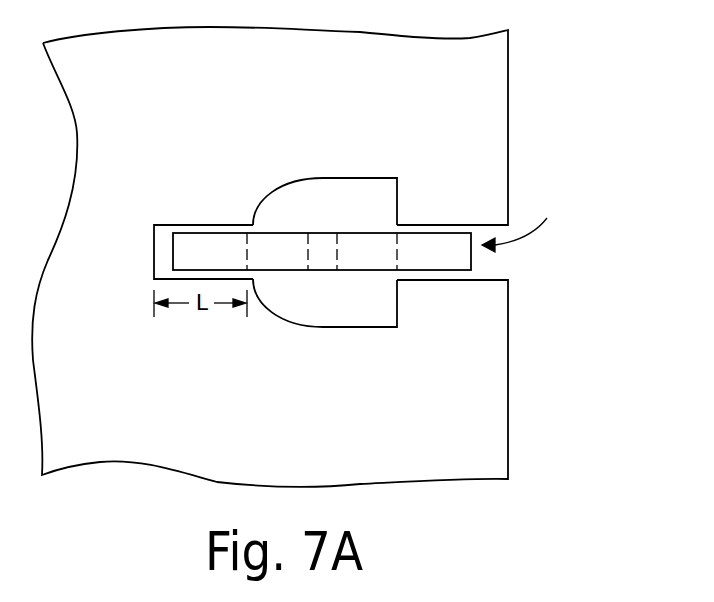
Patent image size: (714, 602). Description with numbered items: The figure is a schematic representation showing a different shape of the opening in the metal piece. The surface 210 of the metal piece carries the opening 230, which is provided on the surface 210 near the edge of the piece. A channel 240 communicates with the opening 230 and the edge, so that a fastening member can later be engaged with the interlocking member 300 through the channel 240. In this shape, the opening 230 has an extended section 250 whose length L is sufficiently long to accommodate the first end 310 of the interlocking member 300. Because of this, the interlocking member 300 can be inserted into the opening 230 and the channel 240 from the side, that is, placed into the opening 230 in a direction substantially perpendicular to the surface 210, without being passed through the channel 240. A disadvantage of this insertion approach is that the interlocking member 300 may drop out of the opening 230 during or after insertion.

The surface 210 is at (118, 413).
The opening 230 is at (340, 197).
The channel 240 is at (498, 263).
The extended section 250 is at (191, 223).
The interlocking member 300 is at (527, 219).
The first end 310 is at (182, 251).